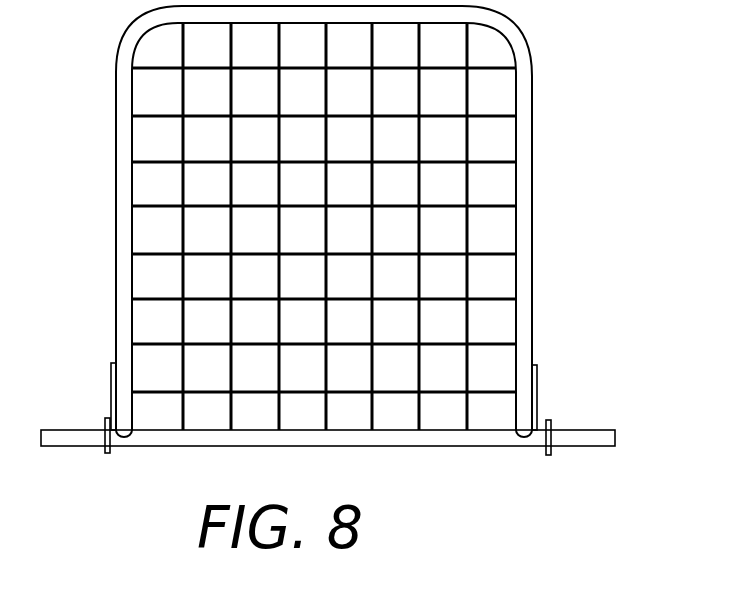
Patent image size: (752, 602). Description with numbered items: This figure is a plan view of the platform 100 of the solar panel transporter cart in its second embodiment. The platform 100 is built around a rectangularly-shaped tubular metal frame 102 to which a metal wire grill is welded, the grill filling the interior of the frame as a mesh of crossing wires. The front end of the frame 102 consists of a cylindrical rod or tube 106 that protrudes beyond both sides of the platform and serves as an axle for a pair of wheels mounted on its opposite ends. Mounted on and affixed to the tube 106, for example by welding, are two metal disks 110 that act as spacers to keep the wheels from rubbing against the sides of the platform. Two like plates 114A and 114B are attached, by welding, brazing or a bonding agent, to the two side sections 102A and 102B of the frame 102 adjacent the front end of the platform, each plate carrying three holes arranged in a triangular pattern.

The platform 100 is at (331, 221).
The tubular metal frame 102 is at (331, 221).
The side section 102A is at (117, 212).
The side section 102B is at (534, 220).
The cylindrical rod or tube 106 is at (323, 447).
The metal disks 110 is at (106, 418).
The plate 114A is at (112, 382).
The plate 114B is at (538, 368).